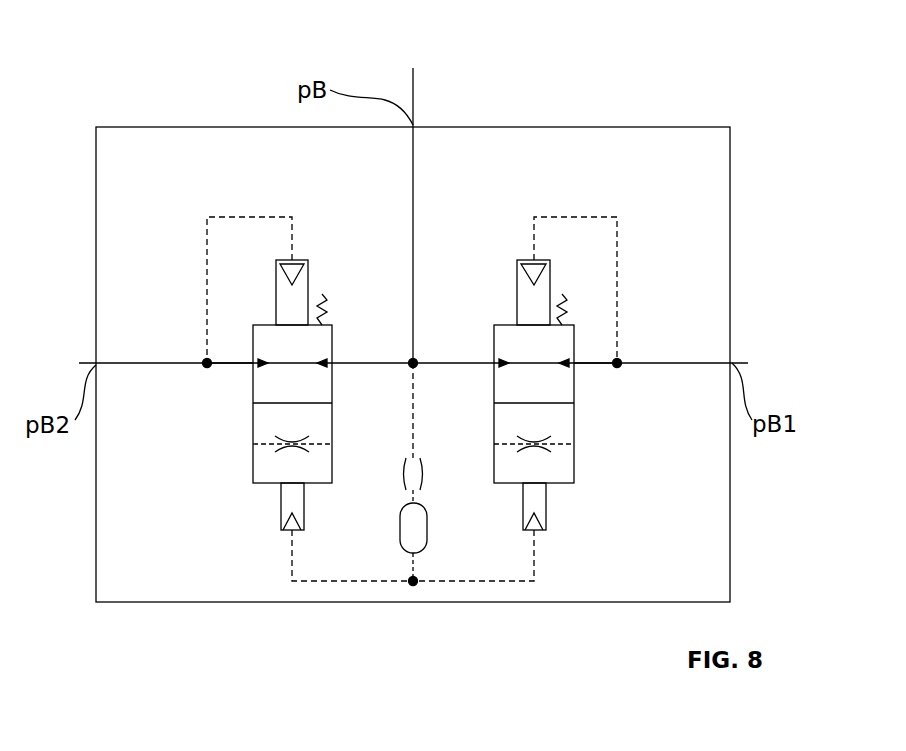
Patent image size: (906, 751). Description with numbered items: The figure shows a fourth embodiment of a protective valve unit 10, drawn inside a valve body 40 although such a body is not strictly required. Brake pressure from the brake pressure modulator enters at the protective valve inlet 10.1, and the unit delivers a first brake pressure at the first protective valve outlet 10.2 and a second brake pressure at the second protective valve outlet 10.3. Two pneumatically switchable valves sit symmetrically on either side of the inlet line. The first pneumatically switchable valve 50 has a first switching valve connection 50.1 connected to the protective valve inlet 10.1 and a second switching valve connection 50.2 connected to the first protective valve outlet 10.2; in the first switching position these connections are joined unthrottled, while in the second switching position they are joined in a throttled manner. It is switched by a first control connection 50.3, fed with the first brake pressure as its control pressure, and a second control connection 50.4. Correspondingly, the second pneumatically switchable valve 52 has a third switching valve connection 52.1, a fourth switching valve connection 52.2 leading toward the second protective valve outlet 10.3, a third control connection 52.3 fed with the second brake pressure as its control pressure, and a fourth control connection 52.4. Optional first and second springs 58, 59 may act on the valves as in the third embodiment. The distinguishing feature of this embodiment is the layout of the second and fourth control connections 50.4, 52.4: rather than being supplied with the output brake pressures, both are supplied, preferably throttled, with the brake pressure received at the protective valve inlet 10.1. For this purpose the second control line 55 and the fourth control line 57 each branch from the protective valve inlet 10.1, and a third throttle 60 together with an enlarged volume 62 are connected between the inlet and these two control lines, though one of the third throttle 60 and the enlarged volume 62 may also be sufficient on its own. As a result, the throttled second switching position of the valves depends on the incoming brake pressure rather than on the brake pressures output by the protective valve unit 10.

The protective valve unit 10 is at (128, 102).
The valve body 40 is at (665, 127).
The protective valve inlet 10.1 is at (413, 125).
The first protective valve outlet 10.2 is at (732, 363).
The second protective valve outlet 10.3 is at (95, 363).
The first pneumatically switchable valve 50 is at (497, 325).
The first switching valve connection 50.1 is at (490, 362).
The second switching valve connection 50.2 is at (575, 367).
The first control connection 50.3 is at (533, 262).
The second control connection 50.4 is at (535, 533).
The second pneumatically switchable valve 52 is at (262, 325).
The third switching valve connection 52.1 is at (335, 358).
The fourth switching valve connection 52.2 is at (253, 367).
The third control connection 52.3 is at (294, 262).
The fourth control connection 52.4 is at (290, 533).
The second control line 55 is at (477, 581).
The fourth control line 57 is at (363, 581).
The first spring 58 is at (562, 300).
The second spring 59 is at (322, 300).
The third throttle 60 is at (420, 478).
The enlarged volume 62 is at (427, 528).